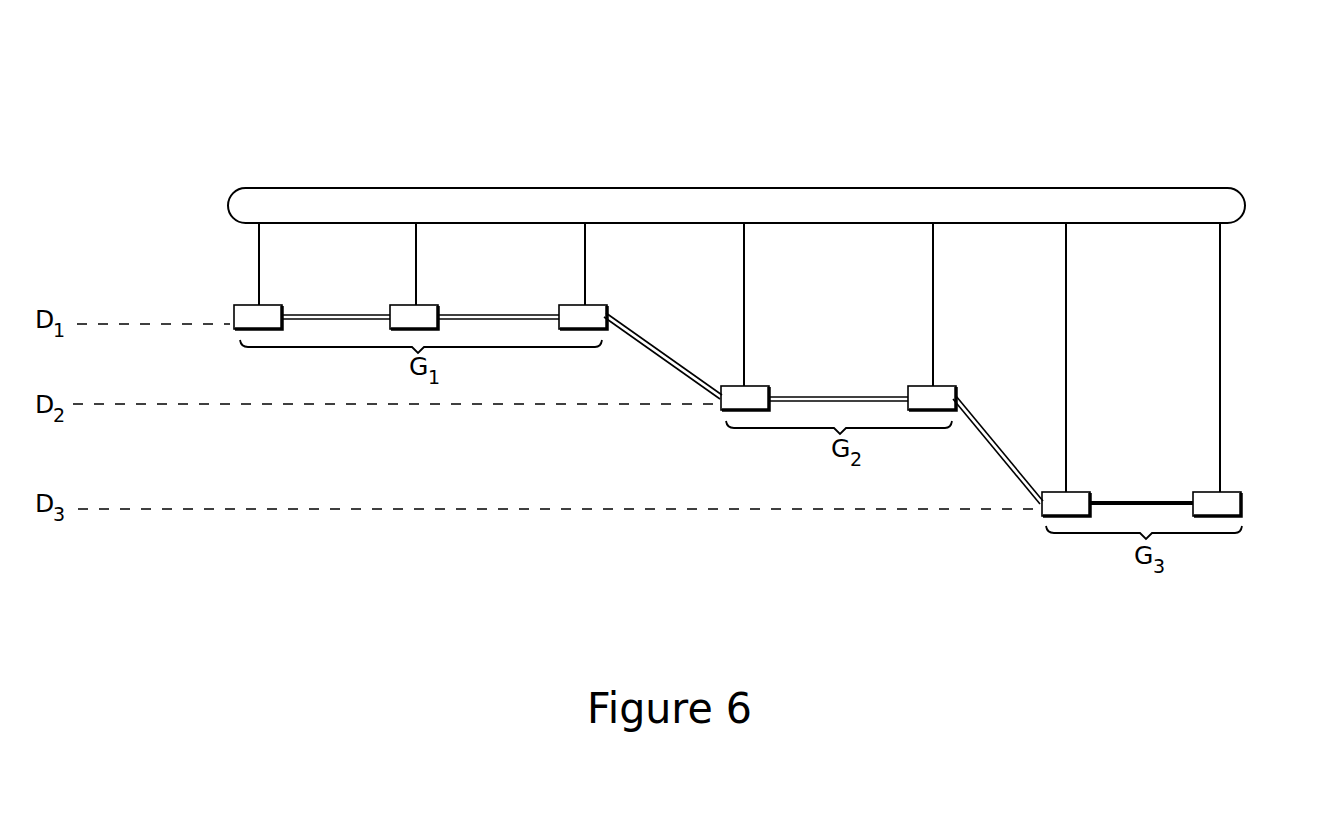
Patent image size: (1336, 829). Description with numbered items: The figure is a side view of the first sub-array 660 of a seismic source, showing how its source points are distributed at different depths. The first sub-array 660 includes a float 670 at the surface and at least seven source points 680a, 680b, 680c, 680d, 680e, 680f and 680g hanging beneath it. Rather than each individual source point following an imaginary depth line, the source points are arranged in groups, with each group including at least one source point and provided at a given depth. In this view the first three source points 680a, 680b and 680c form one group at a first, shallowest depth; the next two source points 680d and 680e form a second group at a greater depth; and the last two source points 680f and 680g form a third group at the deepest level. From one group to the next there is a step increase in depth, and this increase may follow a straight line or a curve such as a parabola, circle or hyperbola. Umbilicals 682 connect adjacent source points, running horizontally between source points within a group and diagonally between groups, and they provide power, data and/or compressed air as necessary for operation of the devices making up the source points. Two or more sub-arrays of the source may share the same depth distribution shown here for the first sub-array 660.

The first sub-array 660 is at (275, 122).
The float 670 is at (422, 200).
The source point 680a is at (270, 304).
The source point 680b is at (426, 304).
The source point 680c is at (598, 304).
The source point 680d is at (753, 385).
The source point 680e is at (947, 385).
The source point 680f is at (1078, 491).
The source point 680g is at (1233, 491).
The umbilicals 682 is at (497, 312).